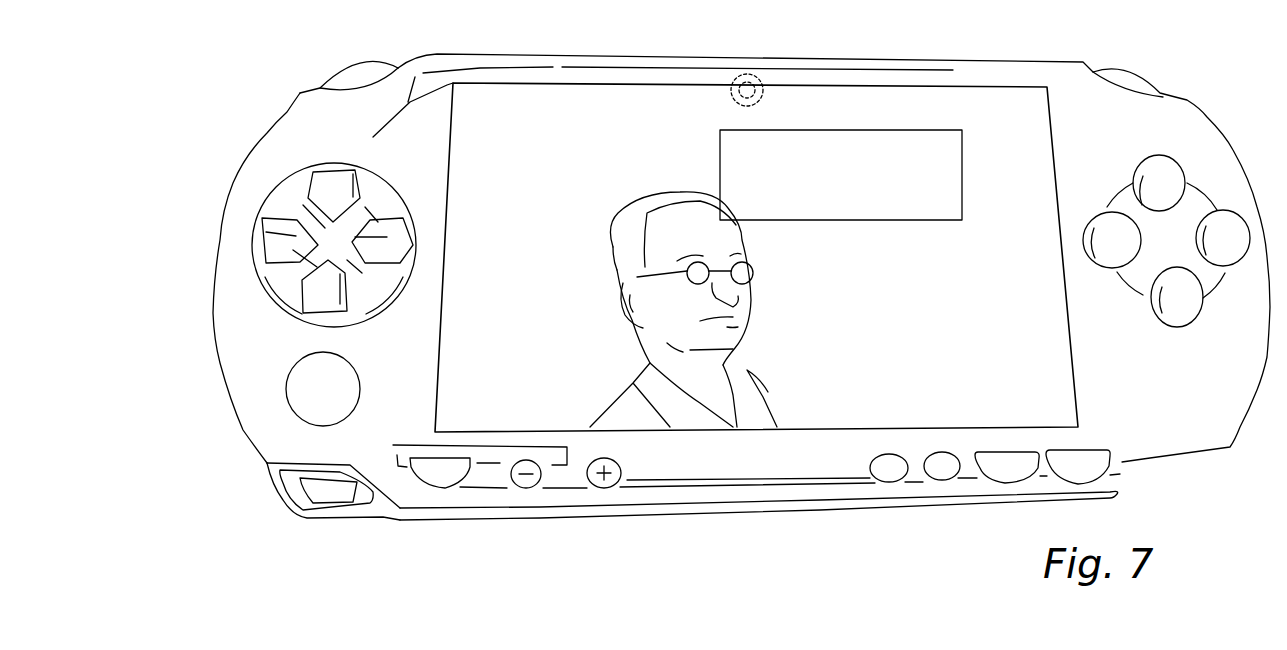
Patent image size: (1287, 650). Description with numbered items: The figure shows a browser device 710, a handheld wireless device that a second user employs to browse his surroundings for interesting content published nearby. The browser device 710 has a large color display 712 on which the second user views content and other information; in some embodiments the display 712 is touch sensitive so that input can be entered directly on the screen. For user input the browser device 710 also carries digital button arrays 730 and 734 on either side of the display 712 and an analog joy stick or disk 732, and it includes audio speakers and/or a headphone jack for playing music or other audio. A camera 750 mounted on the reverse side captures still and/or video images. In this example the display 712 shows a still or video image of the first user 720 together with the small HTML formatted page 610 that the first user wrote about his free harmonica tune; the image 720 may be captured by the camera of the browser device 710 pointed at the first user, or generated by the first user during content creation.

The HTML formatted page 610 is at (841, 175).
The browser device 710 is at (876, 538).
The display 712 is at (756, 257).
The image of the first user 720 is at (778, 325).
The digital button array 730 is at (381, 172).
The analog joy stick or disk 732 is at (286, 390).
The digital button array 734 is at (1194, 342).
The camera 750 is at (743, 72).